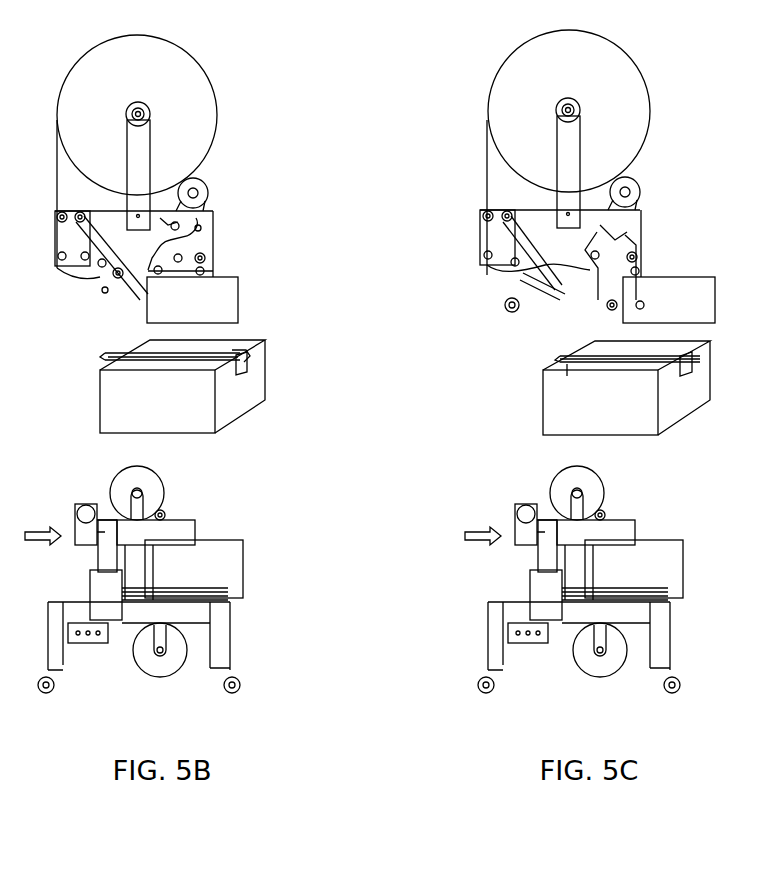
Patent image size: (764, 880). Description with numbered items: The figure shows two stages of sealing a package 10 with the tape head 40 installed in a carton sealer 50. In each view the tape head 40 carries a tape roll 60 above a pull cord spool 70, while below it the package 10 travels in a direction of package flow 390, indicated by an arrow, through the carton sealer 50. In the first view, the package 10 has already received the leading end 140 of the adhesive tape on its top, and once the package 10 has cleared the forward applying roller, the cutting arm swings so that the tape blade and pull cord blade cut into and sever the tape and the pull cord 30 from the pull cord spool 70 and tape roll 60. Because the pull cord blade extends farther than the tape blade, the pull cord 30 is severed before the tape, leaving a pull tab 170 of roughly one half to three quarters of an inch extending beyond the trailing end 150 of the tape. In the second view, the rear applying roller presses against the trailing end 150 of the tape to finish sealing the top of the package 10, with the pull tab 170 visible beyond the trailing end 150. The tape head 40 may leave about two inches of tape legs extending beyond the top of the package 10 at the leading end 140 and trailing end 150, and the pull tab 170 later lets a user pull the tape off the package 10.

In FIG. 5B, the package 10 is at (238, 277).
In FIG. 5C, the package 10 is at (672, 277).
In FIG. 5B, the pull cord 30 is at (240, 340).
In FIG. 5B, the tape head 40 is at (248, 123).
In FIG. 5C, the tape head 40 is at (437, 135).
In FIG. 5B, the carton sealer 50 is at (300, 526).
In FIG. 5C, the carton sealer 50 is at (410, 565).
In FIG. 5B, the tape roll 60 is at (212, 92).
In FIG. 5C, the tape roll 60 is at (500, 72).
In FIG. 5B, the pull cord spool 70 is at (210, 196).
In FIG. 5C, the pull cord spool 70 is at (637, 179).
In FIG. 5B, the leading end 140 is at (258, 368).
In FIG. 5C, the trailing end 150 is at (567, 372).
In FIG. 5B, the pull tab 170 is at (105, 357).
In FIG. 5C, the pull tab 170 is at (569, 375).
In FIG. 5B, the direction of package flow 390 is at (35, 533).
In FIG. 5C, the direction of package flow 390 is at (478, 533).